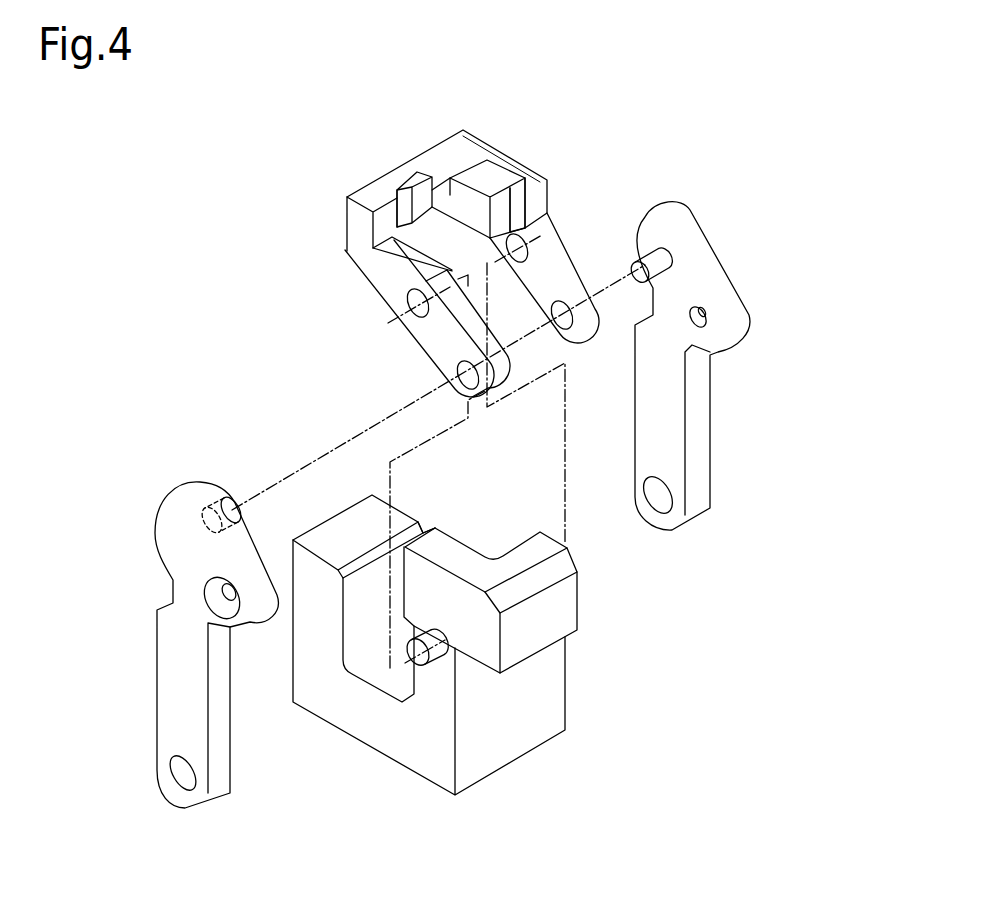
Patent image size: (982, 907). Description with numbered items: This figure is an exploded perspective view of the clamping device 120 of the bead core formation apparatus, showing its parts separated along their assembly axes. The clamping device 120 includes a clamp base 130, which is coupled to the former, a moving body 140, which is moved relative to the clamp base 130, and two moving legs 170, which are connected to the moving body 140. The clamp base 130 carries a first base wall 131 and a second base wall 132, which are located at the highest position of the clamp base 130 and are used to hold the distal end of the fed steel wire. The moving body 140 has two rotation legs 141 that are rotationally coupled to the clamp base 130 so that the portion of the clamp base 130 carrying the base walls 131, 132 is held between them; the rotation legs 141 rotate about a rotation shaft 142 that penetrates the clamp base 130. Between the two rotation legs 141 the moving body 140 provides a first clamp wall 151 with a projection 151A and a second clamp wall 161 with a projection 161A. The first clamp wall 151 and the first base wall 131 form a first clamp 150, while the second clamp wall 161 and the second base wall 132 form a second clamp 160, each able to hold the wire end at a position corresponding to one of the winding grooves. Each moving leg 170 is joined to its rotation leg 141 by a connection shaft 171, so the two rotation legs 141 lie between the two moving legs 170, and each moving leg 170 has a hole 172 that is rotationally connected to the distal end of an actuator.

The clamping device 120 is at (792, 146).
The clamp base 130 is at (316, 700).
The first base wall 131 is at (433, 527).
The second base wall 132 is at (517, 548).
The moving body 140 is at (351, 243).
The rotation leg 141 is at (427, 349).
The rotation shaft 142 is at (443, 657).
The first clamp 150 is at (354, 138).
The first clamp wall 151 is at (397, 185).
The projection 151A is at (402, 199).
The second clamp 160 is at (621, 157).
The second clamp wall 161 is at (498, 192).
The projection 161A is at (522, 202).
The moving leg 170 is at (158, 690).
The connection shaft 171 is at (236, 502).
The hole 172 is at (183, 780).